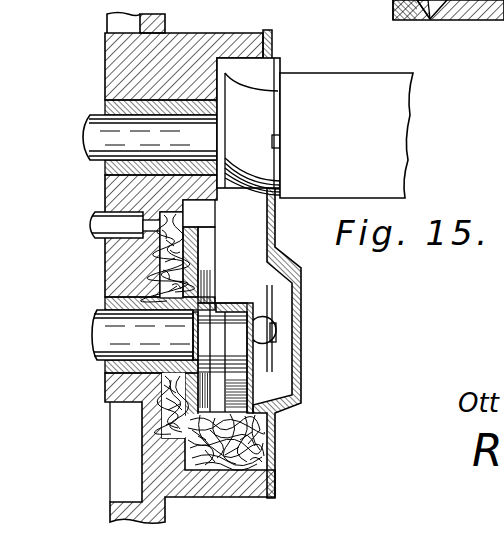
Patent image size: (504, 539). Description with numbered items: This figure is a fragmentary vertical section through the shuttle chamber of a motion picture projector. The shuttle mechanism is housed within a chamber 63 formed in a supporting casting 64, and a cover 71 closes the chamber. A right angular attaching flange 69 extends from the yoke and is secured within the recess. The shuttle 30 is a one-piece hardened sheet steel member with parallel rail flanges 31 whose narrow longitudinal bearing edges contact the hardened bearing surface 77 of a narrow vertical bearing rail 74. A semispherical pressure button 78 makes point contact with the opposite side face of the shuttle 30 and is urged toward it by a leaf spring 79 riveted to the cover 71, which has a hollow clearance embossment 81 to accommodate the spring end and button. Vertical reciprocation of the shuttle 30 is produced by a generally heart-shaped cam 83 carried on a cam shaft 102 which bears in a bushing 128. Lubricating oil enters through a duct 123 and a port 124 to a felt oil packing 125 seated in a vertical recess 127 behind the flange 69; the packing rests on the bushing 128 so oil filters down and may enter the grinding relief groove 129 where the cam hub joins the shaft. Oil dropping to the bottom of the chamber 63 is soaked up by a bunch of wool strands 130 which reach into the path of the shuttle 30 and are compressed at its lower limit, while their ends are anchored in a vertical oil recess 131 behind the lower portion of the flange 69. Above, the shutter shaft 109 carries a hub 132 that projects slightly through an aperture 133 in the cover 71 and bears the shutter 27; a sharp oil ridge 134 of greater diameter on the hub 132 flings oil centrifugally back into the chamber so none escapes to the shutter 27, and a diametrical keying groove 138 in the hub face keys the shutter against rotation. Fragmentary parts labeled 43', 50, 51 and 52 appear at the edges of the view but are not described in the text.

The shutter 27 is at (383, 133).
The shuttle 30 is at (301, 384).
The rail flanges 31 is at (214, 340).
The frame 43' is at (70, 11).
The wedge 50 is at (428, 20).
The wedge 51 is at (407, 20).
The member 52 is at (395, 10).
The chamber 63 is at (245, 471).
The supporting casting 64 is at (204, 33).
The attaching flange 69 is at (196, 221).
The cover 71 is at (272, 48).
The bearing rail 74 is at (215, 242).
The bearing surface 77 is at (215, 254).
The pressure button 78 is at (262, 326).
The leaf spring 79 is at (276, 352).
The clearance embossment 81 is at (301, 285).
The vertical reciprocation cam 83 is at (236, 366).
The cam shaft 102 is at (100, 321).
The shutter shaft 109 is at (95, 131).
The duct 123 is at (93, 230).
The port 124 is at (153, 233).
The oil packing 125 is at (163, 267).
The vertical recess 127 is at (181, 177).
The bushing 128 is at (108, 369).
The grinding relief groove 129 is at (196, 331).
The wool strands 130 is at (277, 444).
The oil recess 131 is at (165, 432).
The hub 132 is at (265, 121).
The aperture 133 is at (277, 78).
The oil ridge 134 is at (225, 116).
The keying groove 138 is at (272, 141).